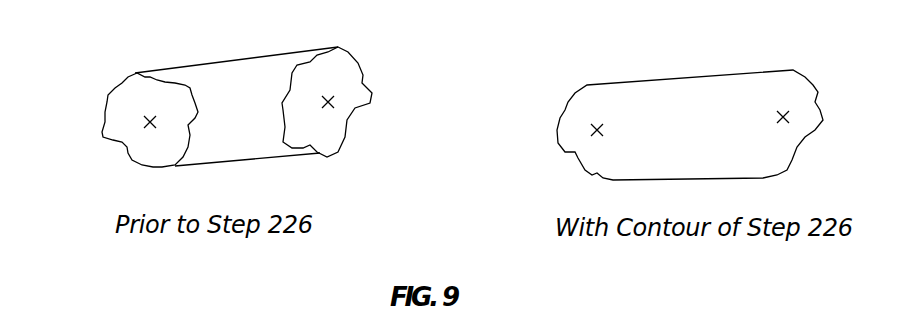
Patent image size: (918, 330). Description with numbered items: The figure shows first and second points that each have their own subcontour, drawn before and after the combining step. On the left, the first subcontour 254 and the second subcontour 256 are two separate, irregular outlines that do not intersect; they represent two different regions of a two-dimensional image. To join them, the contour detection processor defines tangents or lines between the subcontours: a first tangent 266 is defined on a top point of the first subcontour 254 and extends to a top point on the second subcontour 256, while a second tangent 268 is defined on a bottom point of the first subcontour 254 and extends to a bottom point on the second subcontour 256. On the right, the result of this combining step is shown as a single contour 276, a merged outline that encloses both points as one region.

The first subcontour 254 is at (108, 100).
The second subcontour 256 is at (347, 124).
The first tangent 266 is at (235, 58).
The second tangent 268 is at (252, 168).
The single contour 276 is at (705, 72).